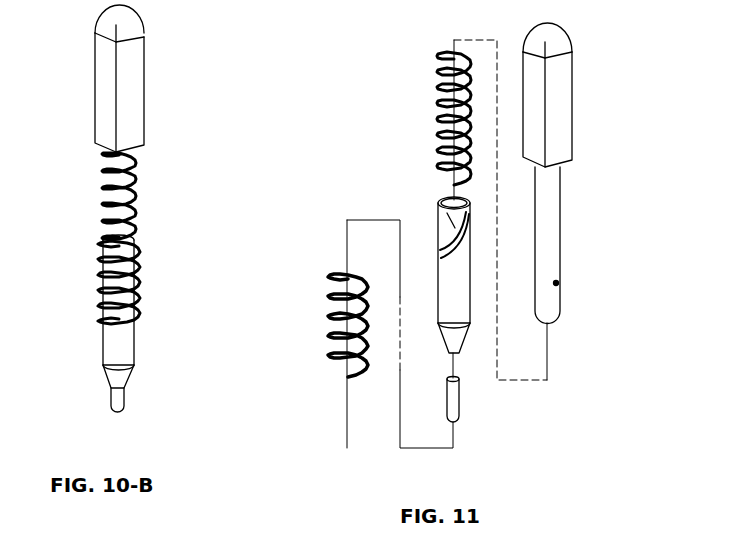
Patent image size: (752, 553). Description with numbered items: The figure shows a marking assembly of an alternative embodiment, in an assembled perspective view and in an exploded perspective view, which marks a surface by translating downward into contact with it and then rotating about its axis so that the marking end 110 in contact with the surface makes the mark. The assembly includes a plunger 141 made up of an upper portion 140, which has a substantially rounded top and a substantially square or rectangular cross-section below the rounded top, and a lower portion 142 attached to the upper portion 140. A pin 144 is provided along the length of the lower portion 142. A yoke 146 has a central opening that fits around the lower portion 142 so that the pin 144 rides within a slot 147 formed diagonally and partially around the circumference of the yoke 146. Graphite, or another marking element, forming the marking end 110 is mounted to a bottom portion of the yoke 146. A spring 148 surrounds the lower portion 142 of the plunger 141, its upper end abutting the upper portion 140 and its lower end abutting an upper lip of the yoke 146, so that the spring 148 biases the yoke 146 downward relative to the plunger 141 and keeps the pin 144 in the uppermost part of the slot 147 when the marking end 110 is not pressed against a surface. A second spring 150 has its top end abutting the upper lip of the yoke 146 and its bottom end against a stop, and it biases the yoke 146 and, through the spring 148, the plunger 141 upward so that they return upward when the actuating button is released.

In FIG. 10-B, the marking end 110 is at (115, 407).
In FIG. 11, the marking end 110 is at (459, 413).
In FIG. 10-B, the upper portion 140 is at (101, 52).
In FIG. 11, the upper portion 140 is at (562, 105).
In FIG. 10-B, the plunger 141 is at (145, 122).
In FIG. 11, the plunger 141 is at (573, 145).
In FIG. 11, the lower portion 142 is at (548, 235).
In FIG. 11, the pin 144 is at (558, 285).
In FIG. 10-B, the yoke 146 is at (117, 345).
In FIG. 11, the yoke 146 is at (438, 200).
In FIG. 11, the slot 147 is at (440, 243).
In FIG. 10-B, the spring 148 is at (103, 188).
In FIG. 11, the spring 148 is at (440, 79).
In FIG. 10-B, the spring 150 is at (103, 283).
In FIG. 11, the spring 150 is at (330, 310).